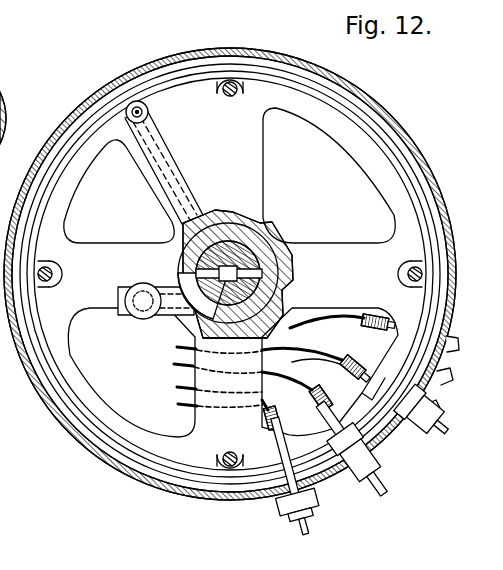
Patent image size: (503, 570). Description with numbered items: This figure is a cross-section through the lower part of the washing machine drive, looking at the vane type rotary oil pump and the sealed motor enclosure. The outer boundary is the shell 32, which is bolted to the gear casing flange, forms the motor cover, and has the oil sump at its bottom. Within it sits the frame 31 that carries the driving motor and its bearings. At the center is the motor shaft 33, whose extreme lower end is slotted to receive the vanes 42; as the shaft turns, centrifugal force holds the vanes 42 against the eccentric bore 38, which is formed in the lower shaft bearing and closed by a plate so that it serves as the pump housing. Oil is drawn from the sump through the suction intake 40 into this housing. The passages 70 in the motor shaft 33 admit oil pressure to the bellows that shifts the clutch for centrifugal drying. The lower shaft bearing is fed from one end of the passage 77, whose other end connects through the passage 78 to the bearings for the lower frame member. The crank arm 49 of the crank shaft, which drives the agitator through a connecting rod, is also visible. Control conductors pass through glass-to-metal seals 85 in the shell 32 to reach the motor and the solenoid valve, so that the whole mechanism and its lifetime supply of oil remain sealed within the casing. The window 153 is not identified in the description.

The frame 31 is at (68, 412).
The shell 32 is at (73, 441).
The motor shaft 33 is at (268, 262).
The eccentric bore 38 is at (258, 290).
The suction intake 40 is at (141, 312).
The vanes 42 is at (229, 265).
The crank arm 49 is at (6, 126).
The passages 70 is at (248, 252).
The passage 77 is at (182, 190).
The passage 78 is at (149, 106).
The glass-to-metal seals 85 is at (380, 464).
The window opening 153 is at (264, 203).